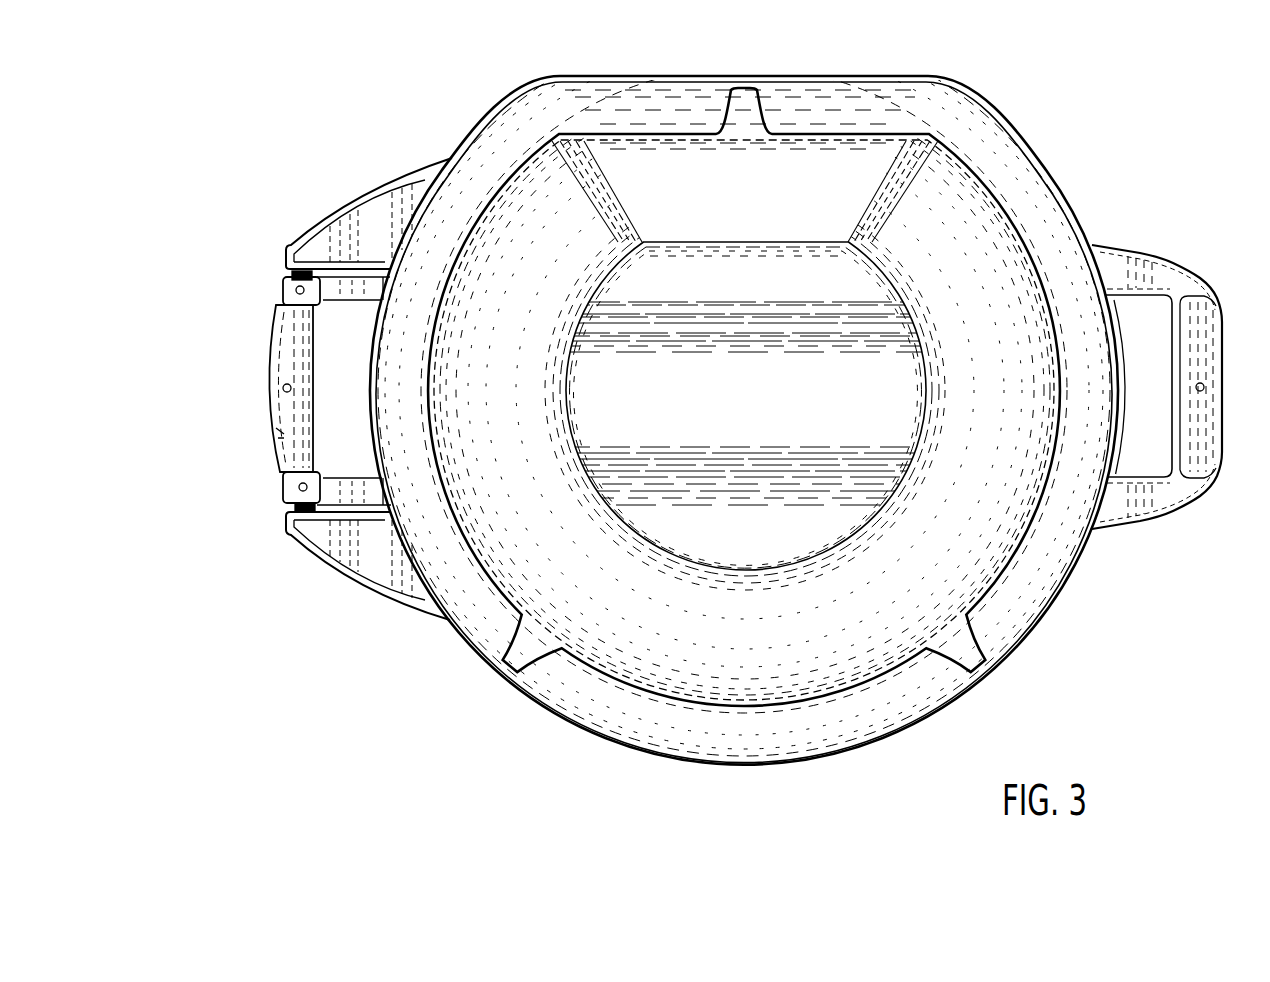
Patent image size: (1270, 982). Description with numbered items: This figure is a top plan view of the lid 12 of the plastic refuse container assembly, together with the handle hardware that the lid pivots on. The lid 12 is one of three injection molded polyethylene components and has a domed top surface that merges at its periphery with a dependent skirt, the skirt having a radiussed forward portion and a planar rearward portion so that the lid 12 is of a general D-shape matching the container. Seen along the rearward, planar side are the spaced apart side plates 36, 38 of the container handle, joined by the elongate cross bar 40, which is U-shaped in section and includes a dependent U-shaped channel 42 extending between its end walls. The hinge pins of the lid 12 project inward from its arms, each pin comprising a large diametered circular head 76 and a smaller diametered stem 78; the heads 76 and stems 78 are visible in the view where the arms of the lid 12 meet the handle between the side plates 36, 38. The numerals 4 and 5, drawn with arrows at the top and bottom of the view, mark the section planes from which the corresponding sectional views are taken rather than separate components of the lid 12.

The lid 12 is at (790, 190).
The side plate 36 is at (369, 211).
The side plate 38 is at (313, 535).
The cross bar 40 is at (270, 358).
The U-shaped channel 42 is at (280, 433).
The circular head 76 is at (283, 290).
The stem 78 is at (292, 270).
The section line 4- 4 is at (1085, 203).
The section line 5- 5 is at (1063, 177).